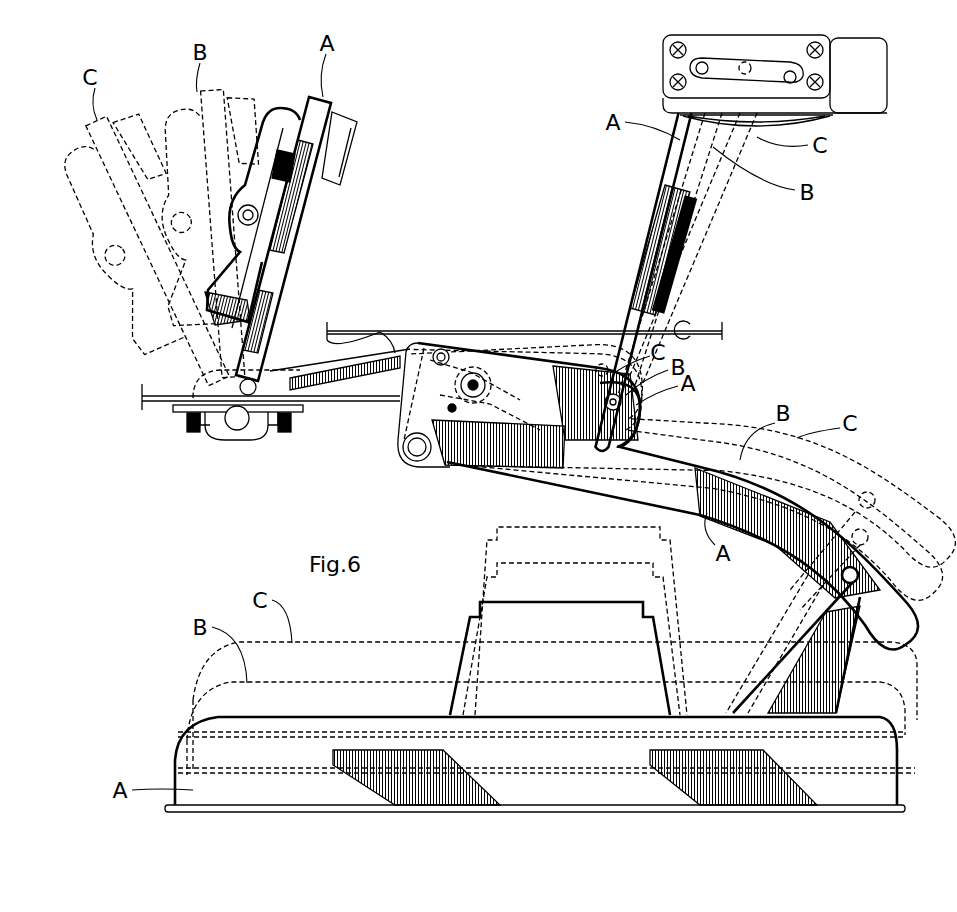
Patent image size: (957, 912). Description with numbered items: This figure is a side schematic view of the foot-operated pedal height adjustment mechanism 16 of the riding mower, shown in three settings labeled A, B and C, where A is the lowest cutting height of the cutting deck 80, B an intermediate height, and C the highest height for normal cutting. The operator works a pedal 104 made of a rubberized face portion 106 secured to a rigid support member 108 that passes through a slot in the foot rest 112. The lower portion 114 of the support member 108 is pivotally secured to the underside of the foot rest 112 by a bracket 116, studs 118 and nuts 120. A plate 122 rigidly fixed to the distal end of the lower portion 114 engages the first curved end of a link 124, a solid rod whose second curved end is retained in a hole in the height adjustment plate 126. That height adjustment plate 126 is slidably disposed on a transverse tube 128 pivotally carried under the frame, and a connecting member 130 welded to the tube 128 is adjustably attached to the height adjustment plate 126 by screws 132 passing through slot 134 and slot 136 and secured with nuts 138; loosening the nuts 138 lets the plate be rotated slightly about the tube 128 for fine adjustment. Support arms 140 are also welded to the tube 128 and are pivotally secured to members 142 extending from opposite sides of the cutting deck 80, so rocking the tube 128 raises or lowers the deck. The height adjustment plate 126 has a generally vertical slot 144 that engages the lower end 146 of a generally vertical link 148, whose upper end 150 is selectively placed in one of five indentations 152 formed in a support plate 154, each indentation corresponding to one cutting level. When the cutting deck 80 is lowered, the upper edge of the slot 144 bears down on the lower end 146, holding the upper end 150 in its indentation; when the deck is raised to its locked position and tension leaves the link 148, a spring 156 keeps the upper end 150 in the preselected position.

The foot-operated pedal height adjustment mechanism 16 is at (515, 118).
The cutting deck 80 is at (590, 764).
The pedal 104 is at (340, 92).
The rubberized face portion 106 is at (308, 207).
The rigid support member 108 is at (268, 263).
The foot rest 112 is at (190, 385).
The lower portion 114 is at (237, 431).
The bracket 116 is at (175, 411).
The studs 118 is at (193, 433).
The nuts 120 is at (192, 421).
The plate 122 is at (273, 378).
The link 124 is at (372, 330).
The height adjustment plate 126 is at (560, 372).
The transverse tube 128 is at (410, 460).
The connecting member 130 is at (455, 440).
The screws 132 is at (487, 385).
The slot 134 is at (442, 352).
The slot 136 is at (448, 410).
The nuts 138 is at (477, 373).
The support arms 140 is at (640, 493).
The members 142 is at (800, 627).
The vertical slot 144 is at (630, 433).
The lower end 146 is at (640, 415).
The link 148 is at (660, 217).
The upper end 150 is at (695, 68).
The indentations 152 is at (770, 72).
The support plate 154 is at (820, 65).
The spring 156 is at (690, 237).